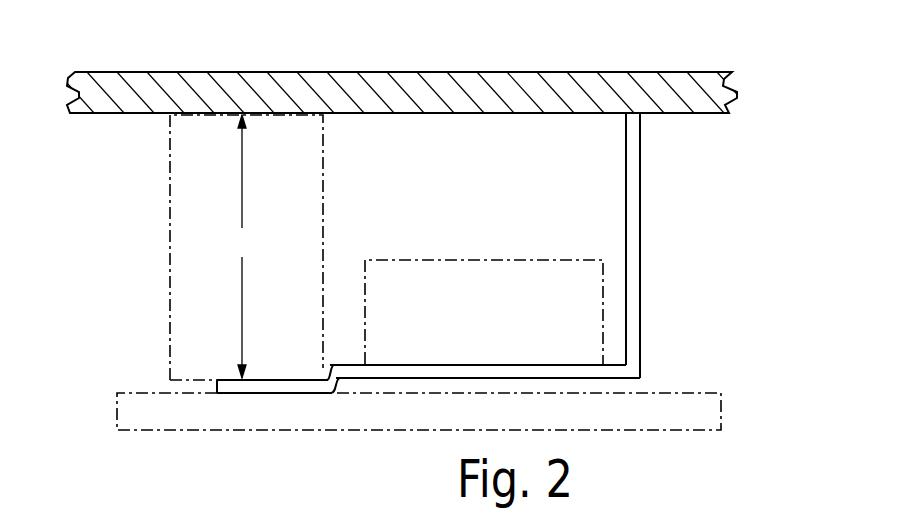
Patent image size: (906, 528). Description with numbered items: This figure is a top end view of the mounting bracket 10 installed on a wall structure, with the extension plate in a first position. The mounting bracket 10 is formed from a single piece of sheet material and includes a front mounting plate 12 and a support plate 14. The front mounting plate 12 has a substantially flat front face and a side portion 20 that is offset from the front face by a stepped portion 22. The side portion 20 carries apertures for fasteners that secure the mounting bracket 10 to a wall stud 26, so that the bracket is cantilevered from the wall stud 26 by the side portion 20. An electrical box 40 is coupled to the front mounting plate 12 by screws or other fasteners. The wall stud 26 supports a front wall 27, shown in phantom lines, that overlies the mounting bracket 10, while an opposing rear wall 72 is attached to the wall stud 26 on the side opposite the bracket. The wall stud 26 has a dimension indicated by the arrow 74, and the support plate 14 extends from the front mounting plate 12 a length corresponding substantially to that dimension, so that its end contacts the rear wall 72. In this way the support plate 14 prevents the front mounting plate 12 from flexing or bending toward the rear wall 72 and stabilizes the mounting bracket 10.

The mounting bracket 10 is at (505, 306).
The front mounting plate 12 is at (569, 390).
The support plate 14 is at (652, 265).
The side portion 20 is at (273, 395).
The stepped portion 22 is at (337, 390).
The wall stud 26 is at (170, 238).
The front wall 27 is at (682, 395).
The electrical box 40 is at (450, 260).
The rear wall 72 is at (610, 72).
The arrow 74 is at (239, 246).